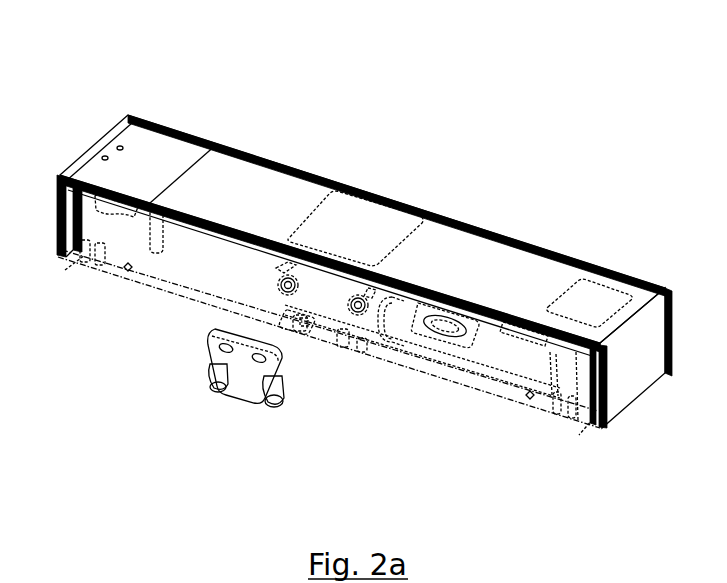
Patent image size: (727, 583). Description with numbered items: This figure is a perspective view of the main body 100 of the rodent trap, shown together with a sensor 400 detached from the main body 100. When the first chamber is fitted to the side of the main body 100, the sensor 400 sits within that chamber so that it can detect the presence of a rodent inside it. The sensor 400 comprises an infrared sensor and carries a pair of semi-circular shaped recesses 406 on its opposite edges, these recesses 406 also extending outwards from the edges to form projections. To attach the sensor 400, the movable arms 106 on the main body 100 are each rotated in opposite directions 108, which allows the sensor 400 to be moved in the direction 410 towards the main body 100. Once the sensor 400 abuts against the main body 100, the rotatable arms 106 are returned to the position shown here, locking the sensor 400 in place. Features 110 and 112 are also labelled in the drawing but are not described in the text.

The main body 100 is at (246, 133).
The movable arms 106 is at (300, 292).
The opposite directions 108 is at (350, 286).
The retaining bracket 110 is at (397, 308).
The receptacle 112 is at (392, 326).
The sensor 400 is at (203, 333).
The semi-circular shaped recesses 406 is at (212, 354).
The direction 410 is at (283, 313).